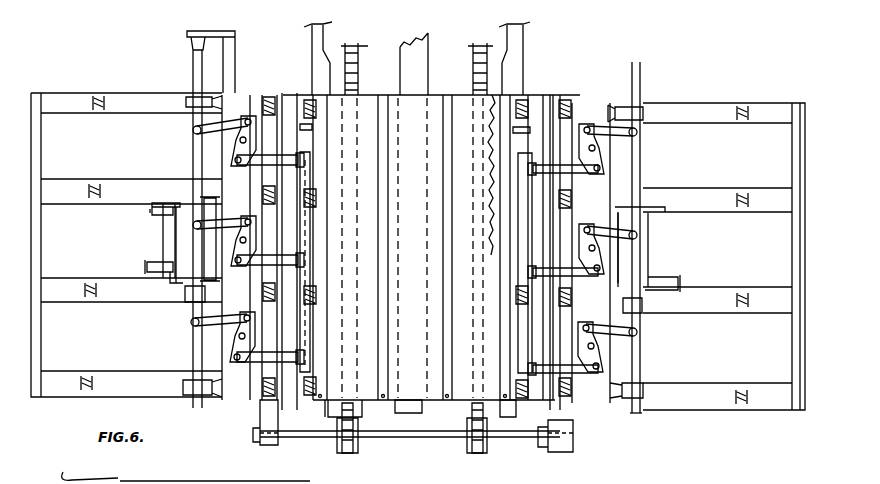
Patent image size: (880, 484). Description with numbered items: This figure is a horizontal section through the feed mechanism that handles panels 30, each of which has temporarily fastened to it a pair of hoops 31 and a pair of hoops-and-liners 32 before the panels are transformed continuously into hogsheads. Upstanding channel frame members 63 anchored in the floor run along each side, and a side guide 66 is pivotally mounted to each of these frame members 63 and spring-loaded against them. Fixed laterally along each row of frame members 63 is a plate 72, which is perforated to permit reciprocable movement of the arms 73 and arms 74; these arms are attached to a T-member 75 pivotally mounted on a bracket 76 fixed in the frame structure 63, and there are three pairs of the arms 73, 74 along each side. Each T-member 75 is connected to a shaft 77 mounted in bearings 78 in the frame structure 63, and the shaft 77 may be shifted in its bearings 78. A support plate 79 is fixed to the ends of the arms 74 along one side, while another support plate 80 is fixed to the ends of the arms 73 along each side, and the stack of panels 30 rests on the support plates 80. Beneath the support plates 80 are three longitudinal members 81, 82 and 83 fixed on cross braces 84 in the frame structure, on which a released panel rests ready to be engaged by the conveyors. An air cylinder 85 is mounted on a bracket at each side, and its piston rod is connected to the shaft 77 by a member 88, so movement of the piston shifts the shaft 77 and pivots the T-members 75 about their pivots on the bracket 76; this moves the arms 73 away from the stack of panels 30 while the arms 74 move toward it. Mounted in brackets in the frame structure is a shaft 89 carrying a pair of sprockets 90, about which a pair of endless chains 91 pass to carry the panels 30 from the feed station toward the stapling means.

The panel 30 is at (360, 404).
The hoops 31 is at (436, 330).
The hoops-and-liners 32 is at (325, 356).
The upstanding frame members 63 is at (264, 96).
The side guide 66 is at (304, 104).
The plate 72 is at (552, 400).
The arms 73 is at (276, 122).
The arms 74 is at (252, 166).
The T-member 75 is at (232, 128).
The bracket 76 is at (222, 158).
The shaft 77 is at (645, 355).
The bearings 78 is at (643, 397).
The support plate 79 is at (310, 168).
The support plate 80 is at (312, 138).
The longitudinal member 81 is at (316, 404).
The longitudinal member 82 is at (404, 413).
The longitudinal member 83 is at (494, 413).
The cross braces 84 is at (478, 96).
The air cylinder 85 is at (152, 240).
The member 88 is at (190, 298).
The shaft 89 is at (410, 438).
The sprockets 90 is at (358, 440).
The endless chains 91 is at (355, 453).